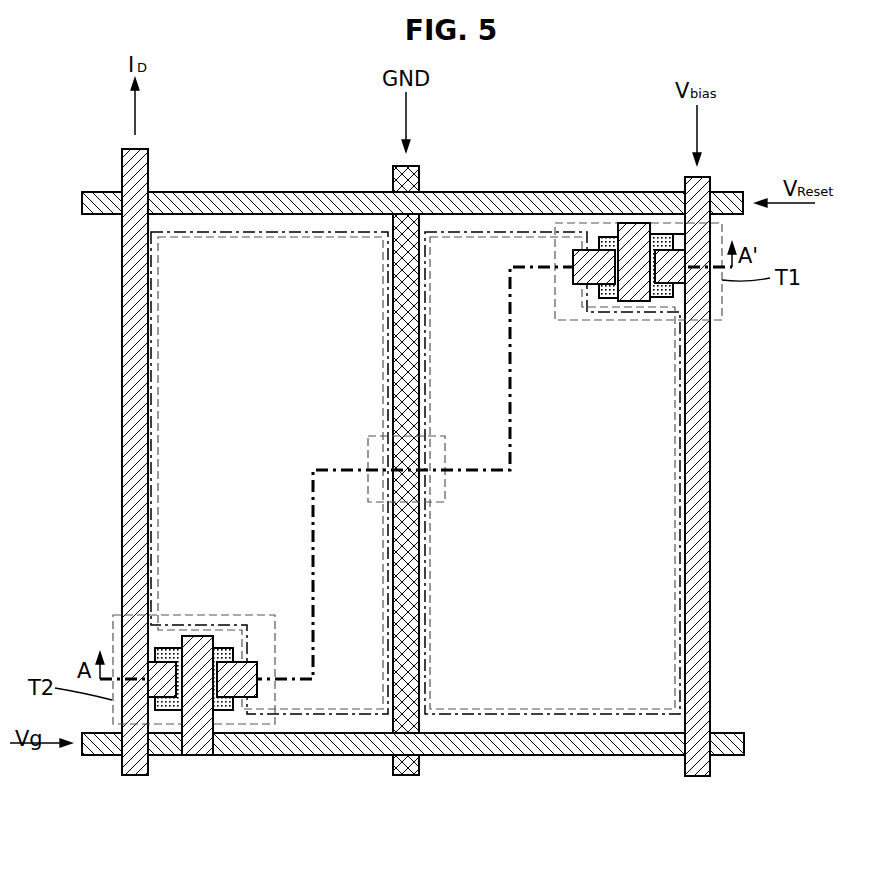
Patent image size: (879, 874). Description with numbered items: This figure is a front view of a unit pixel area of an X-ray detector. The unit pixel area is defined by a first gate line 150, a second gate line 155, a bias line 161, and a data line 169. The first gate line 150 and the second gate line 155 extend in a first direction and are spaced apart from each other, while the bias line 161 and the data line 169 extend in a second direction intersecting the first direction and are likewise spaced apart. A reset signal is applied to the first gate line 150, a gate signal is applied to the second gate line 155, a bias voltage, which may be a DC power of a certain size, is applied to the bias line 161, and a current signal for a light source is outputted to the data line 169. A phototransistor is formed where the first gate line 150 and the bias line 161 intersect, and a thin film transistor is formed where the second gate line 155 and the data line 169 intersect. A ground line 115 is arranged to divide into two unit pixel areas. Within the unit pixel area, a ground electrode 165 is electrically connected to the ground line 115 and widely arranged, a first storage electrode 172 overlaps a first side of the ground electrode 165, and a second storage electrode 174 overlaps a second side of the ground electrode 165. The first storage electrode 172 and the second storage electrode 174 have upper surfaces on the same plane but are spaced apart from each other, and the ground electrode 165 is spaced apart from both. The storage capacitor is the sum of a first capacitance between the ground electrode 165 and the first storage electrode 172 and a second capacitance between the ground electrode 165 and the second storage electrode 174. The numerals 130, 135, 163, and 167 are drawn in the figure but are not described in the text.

The ground line 115 is at (420, 178).
The source electrode of first transistor 130 is at (676, 245).
The semiconductor layer of second transistor 135 is at (165, 710).
The first gate line 150 is at (634, 223).
The second gate line 155 is at (197, 745).
The bias line 161 is at (683, 281).
The semiconductor layer of first transistor 163 is at (596, 240).
The ground electrode 165 is at (157, 434).
The drain electrode of second transistor 167 is at (245, 700).
The data line 169 is at (160, 663).
The first storage electrode 172 is at (683, 575).
The second storage electrode 174 is at (152, 315).